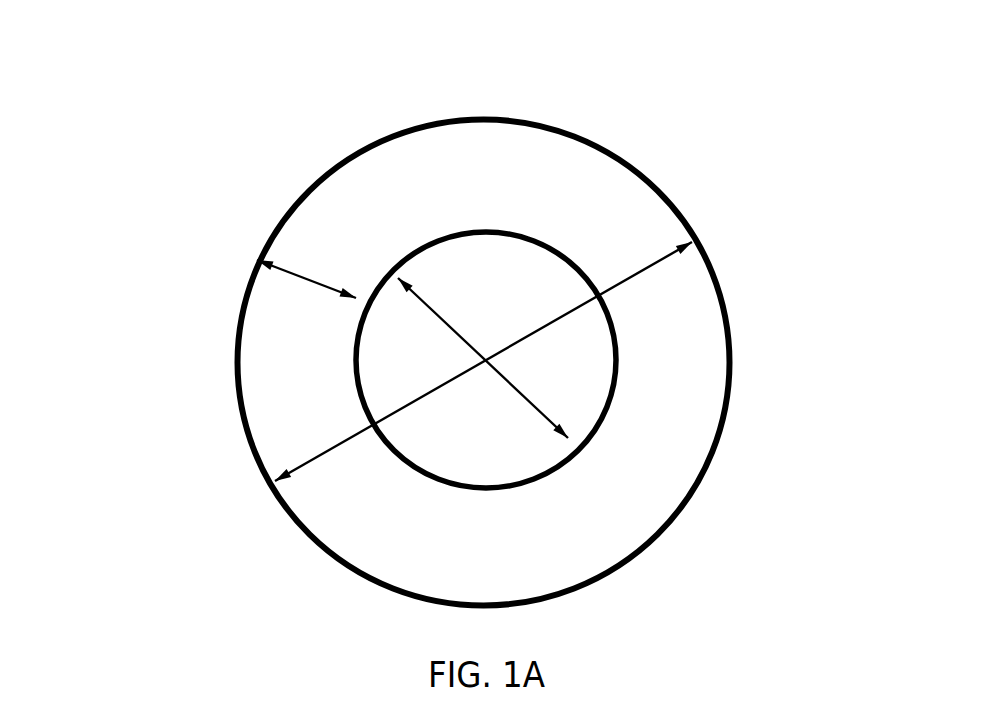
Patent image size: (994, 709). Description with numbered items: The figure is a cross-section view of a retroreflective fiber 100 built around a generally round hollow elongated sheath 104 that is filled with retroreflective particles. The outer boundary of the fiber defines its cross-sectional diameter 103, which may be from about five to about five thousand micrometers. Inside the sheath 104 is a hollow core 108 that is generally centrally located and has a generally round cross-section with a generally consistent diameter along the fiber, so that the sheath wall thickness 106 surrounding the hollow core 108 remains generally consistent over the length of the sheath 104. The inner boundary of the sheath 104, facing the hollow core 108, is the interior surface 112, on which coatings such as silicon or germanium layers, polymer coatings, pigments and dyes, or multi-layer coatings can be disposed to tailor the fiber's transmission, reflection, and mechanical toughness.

The retroreflective fiber 100 is at (205, 195).
The cross-sectional diameter 103 is at (295, 466).
The sheath 104 is at (387, 193).
The wall thickness 106 is at (298, 276).
The hollow core 108 is at (550, 290).
The interior surface 112 is at (598, 400).